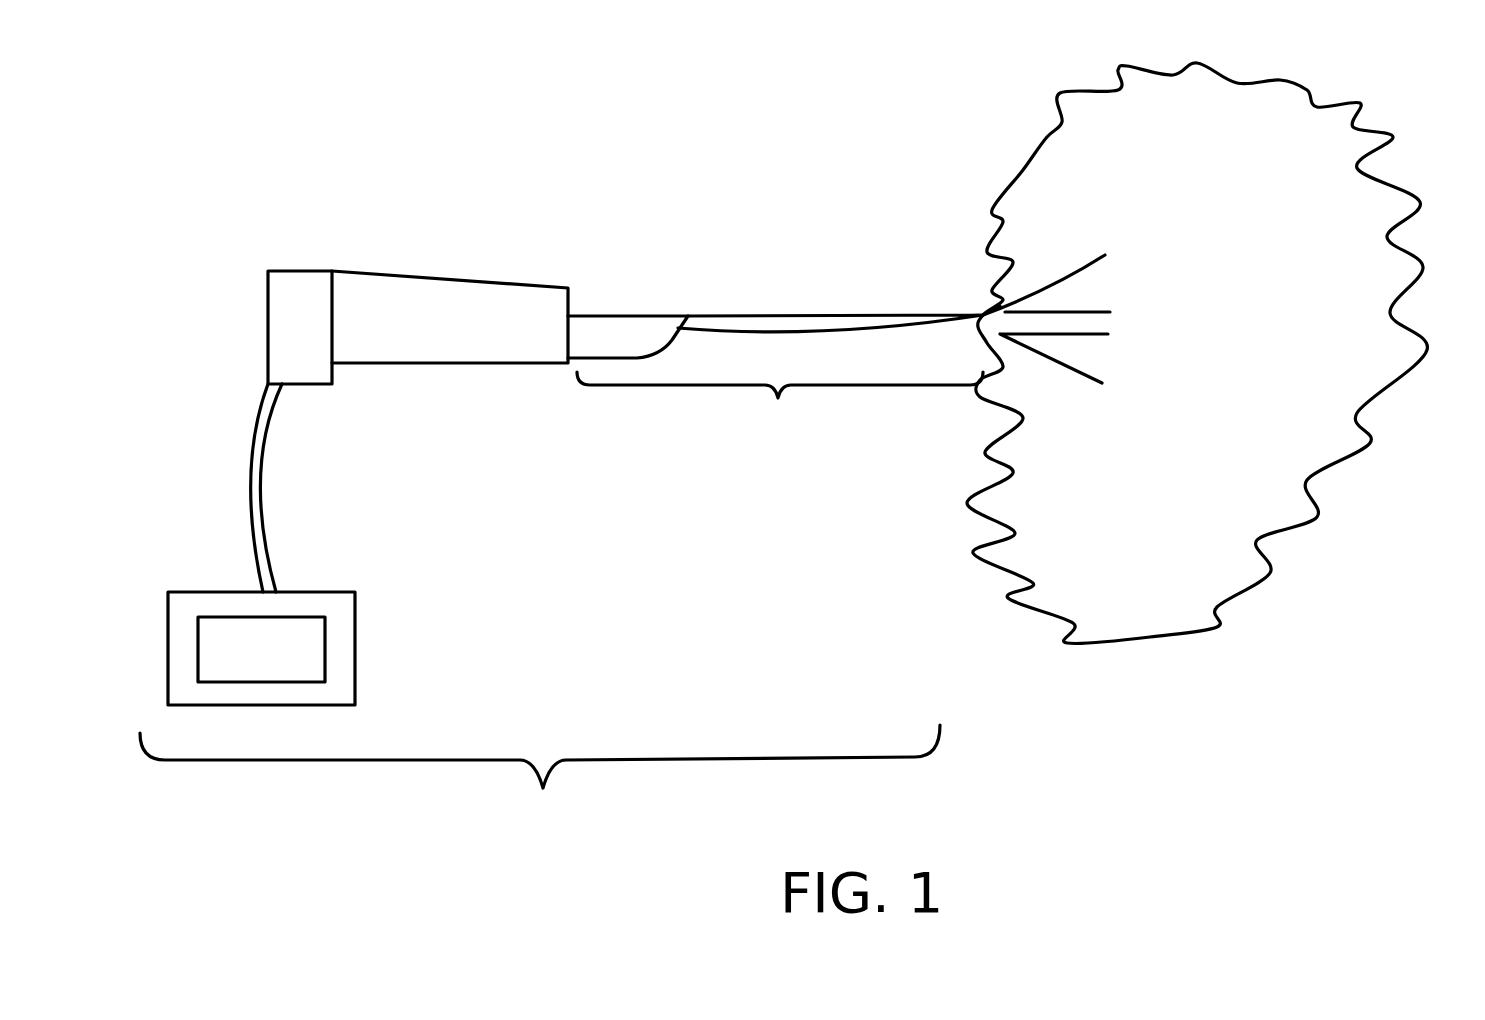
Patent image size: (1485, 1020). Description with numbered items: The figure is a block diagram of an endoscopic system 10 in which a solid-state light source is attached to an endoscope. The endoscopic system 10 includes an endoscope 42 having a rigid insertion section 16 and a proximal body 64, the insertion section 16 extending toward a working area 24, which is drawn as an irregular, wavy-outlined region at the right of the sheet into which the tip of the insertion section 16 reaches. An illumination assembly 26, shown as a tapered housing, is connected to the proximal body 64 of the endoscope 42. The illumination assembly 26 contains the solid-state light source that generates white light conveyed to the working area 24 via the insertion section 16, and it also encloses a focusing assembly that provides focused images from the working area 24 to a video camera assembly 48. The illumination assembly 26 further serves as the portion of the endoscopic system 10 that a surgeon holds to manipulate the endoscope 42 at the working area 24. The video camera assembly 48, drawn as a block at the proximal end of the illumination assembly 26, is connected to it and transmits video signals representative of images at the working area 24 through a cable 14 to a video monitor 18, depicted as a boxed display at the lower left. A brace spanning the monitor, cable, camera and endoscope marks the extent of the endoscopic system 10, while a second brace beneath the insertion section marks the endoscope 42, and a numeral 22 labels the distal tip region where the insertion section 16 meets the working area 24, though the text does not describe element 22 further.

The endoscopic system 10 is at (540, 782).
The cable 14 is at (263, 472).
The rigid insertion section 16 is at (787, 315).
The video monitor 18 is at (355, 630).
The distal tip 22 is at (967, 288).
The working area 24 is at (1393, 137).
The illumination assembly 26 is at (498, 367).
The endoscope 42 is at (780, 413).
The video camera assembly 48 is at (299, 270).
The proximal body 64 is at (613, 315).